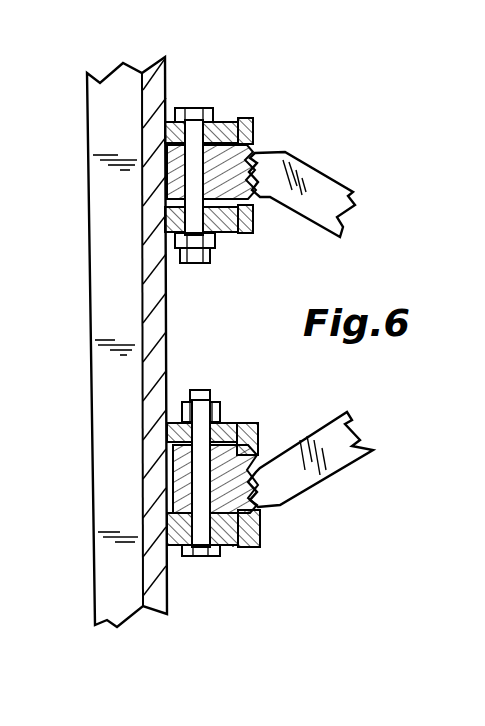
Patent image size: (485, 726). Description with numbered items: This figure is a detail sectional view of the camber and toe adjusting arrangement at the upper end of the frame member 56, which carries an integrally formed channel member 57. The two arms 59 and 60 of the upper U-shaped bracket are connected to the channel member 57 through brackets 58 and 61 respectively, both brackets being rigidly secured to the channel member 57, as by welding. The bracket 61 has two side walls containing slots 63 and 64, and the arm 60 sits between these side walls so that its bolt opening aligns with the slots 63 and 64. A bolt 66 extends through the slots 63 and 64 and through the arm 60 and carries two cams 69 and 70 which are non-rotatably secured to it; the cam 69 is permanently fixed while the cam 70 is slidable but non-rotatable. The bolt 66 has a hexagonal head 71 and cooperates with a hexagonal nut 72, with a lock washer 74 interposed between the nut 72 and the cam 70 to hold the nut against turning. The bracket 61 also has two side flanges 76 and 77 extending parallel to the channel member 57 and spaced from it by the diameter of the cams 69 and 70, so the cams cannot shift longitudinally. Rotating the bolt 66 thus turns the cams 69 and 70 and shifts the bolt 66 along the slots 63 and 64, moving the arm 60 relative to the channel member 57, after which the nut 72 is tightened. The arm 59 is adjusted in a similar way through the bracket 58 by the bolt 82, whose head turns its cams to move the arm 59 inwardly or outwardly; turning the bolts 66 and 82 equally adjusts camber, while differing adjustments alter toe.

The frame member 56 is at (113, 238).
The channel member 57 is at (140, 305).
The bracket 58 is at (258, 229).
The arm 59 is at (311, 170).
The arm 60 is at (340, 466).
The bracket 61 is at (262, 439).
The slot 63 is at (233, 548).
The slot 64 is at (239, 424).
The bolt 66 is at (203, 557).
The cam 69 is at (225, 553).
The cam 70 is at (250, 423).
The hexagonal head 71 is at (190, 557).
The hexagonal nut 72 is at (180, 396).
The lock washer 74 is at (228, 425).
The side flange 76 is at (261, 536).
The side flange 77 is at (260, 421).
The bolt 82 is at (198, 106).